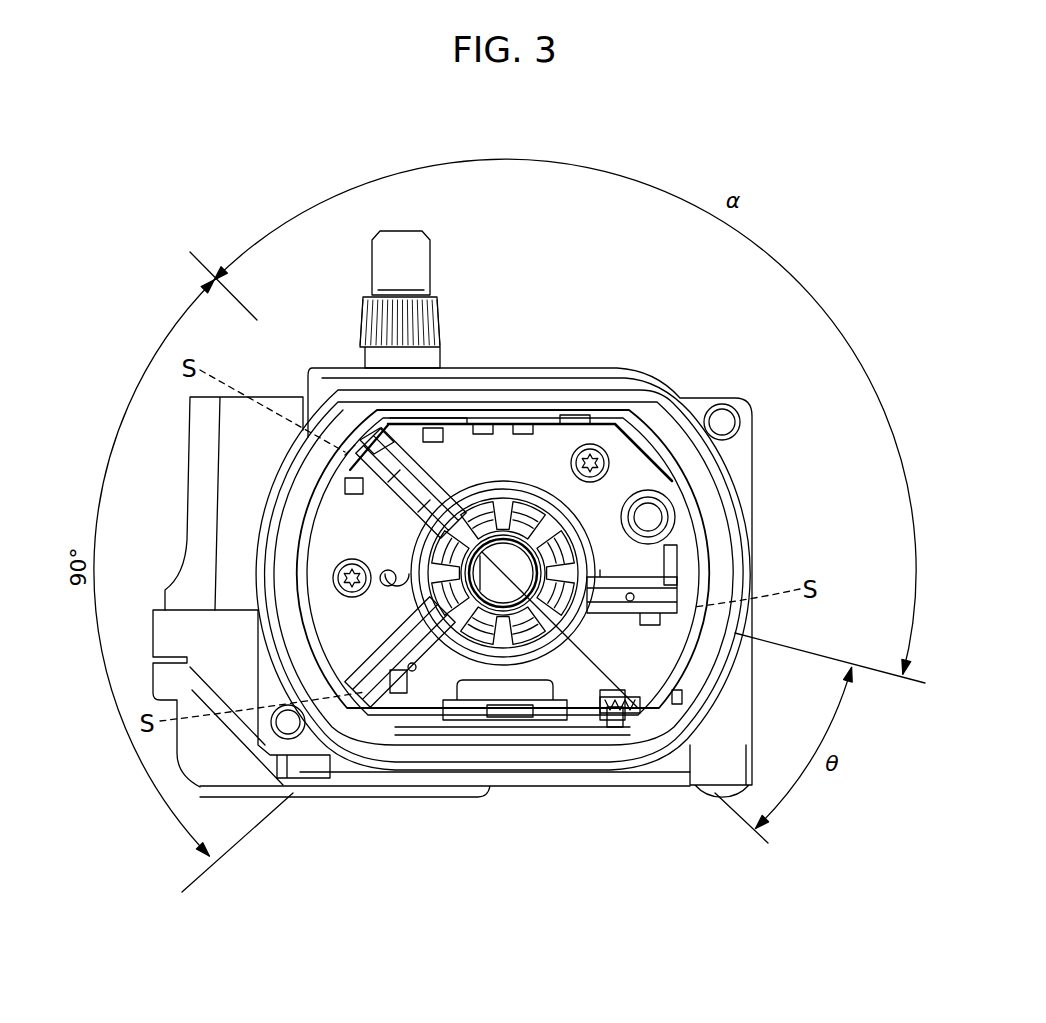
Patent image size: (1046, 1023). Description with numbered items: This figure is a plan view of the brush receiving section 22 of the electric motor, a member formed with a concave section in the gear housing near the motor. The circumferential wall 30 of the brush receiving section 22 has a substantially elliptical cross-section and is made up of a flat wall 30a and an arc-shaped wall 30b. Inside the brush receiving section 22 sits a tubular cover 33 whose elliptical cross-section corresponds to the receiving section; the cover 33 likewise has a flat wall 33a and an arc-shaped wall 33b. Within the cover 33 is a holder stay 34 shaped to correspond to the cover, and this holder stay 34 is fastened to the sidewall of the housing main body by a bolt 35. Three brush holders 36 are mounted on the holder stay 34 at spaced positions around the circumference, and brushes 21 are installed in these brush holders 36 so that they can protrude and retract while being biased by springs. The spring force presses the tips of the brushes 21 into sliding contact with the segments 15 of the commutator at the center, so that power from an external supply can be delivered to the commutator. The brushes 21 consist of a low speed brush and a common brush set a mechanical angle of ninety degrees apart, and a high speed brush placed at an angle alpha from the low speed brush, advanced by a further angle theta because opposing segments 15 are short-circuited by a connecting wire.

The segments 15 is at (425, 560).
The brushes 21 is at (425, 478).
The brush receiving section 22 is at (513, 772).
The circumferential wall 30 is at (461, 595).
The flat wall 30a is at (770, 318).
The arc-shaped wall 30b is at (741, 440).
The cover 33 is at (485, 583).
The flat wall 33a is at (368, 437).
The arc-shaped wall 33b is at (345, 445).
The holder stay 34 is at (547, 450).
The bolt 35 is at (588, 450).
The brush holders 36 is at (397, 443).